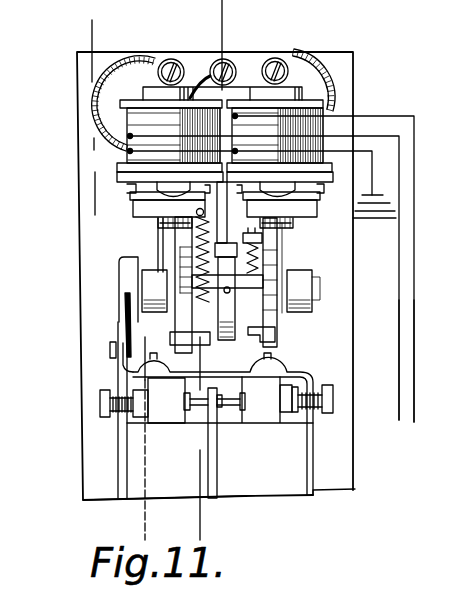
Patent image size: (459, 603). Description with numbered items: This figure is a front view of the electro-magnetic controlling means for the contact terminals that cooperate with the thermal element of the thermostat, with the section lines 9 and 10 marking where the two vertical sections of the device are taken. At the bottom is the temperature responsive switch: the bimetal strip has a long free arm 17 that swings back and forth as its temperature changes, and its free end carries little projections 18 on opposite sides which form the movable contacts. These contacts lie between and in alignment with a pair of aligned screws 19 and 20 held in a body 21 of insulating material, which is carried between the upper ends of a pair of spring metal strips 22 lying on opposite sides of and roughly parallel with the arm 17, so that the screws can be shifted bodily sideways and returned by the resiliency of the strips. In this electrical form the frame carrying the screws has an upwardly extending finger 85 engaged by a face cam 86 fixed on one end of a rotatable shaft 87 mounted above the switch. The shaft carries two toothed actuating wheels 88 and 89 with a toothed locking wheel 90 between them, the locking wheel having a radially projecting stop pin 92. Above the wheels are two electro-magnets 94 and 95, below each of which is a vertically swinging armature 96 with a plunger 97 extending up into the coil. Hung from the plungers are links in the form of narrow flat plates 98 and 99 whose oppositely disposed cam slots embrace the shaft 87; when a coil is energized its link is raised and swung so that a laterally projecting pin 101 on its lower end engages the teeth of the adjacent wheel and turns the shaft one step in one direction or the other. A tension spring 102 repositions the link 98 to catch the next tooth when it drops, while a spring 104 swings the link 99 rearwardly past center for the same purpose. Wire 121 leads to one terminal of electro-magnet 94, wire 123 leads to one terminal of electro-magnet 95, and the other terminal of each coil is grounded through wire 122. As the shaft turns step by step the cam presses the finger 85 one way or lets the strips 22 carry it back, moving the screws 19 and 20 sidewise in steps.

The section line 9- 9 is at (110, 29).
The section line 10- 10 is at (239, 15).
The free arm 17 is at (217, 482).
The projections 18 is at (223, 390).
The screw 19 is at (100, 412).
The screw 20 is at (318, 382).
The body of insulating material 21 is at (173, 418).
The spring metal strips 22 is at (118, 442).
The finger 85 is at (113, 327).
The face cam 86 is at (127, 270).
The rotatable shaft 87 is at (338, 268).
The toothed actuating wheel 88 is at (192, 324).
The toothed actuating wheel 89 is at (277, 324).
The toothed locking wheel 90 is at (240, 312).
The stop pin 92 is at (233, 297).
The electro-magnet 94 is at (128, 156).
The electro-magnet 95 is at (327, 110).
The armature 96 is at (143, 216).
The plunger 97 is at (140, 198).
The link 98 is at (157, 242).
The link 99 is at (287, 247).
The pins 101 is at (257, 340).
The tension spring 102 is at (175, 240).
The spring 104 is at (248, 233).
The wire 121 is at (400, 413).
The wire 122 is at (373, 153).
The wire 123 is at (412, 350).